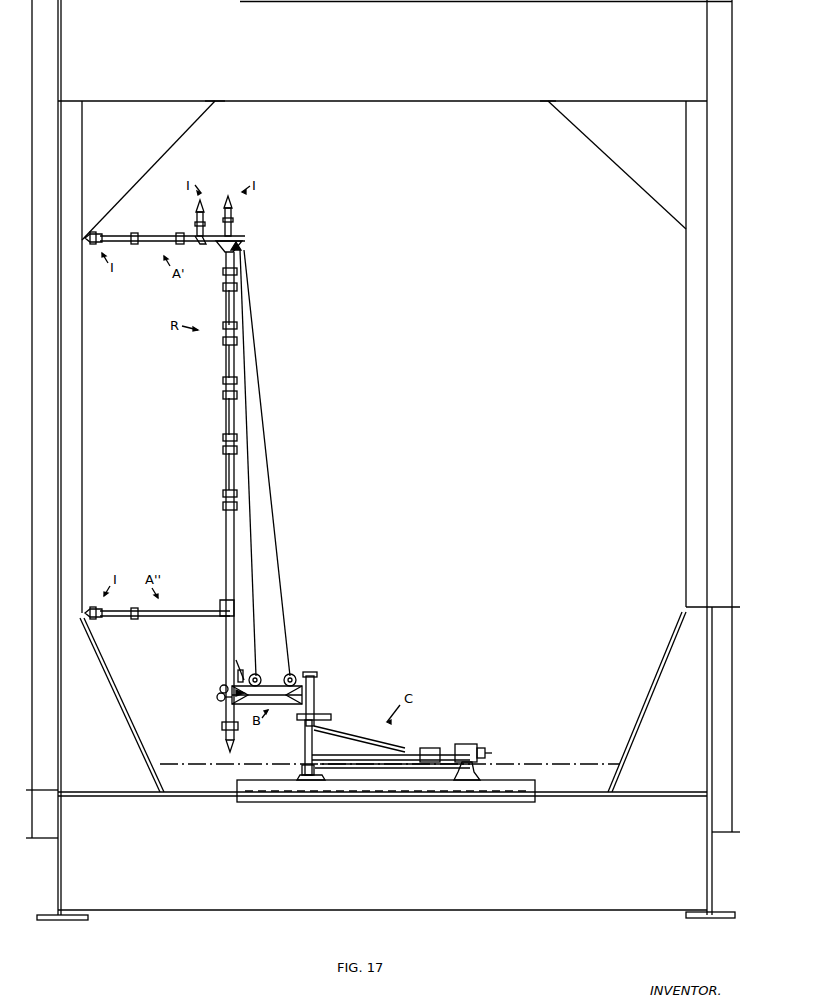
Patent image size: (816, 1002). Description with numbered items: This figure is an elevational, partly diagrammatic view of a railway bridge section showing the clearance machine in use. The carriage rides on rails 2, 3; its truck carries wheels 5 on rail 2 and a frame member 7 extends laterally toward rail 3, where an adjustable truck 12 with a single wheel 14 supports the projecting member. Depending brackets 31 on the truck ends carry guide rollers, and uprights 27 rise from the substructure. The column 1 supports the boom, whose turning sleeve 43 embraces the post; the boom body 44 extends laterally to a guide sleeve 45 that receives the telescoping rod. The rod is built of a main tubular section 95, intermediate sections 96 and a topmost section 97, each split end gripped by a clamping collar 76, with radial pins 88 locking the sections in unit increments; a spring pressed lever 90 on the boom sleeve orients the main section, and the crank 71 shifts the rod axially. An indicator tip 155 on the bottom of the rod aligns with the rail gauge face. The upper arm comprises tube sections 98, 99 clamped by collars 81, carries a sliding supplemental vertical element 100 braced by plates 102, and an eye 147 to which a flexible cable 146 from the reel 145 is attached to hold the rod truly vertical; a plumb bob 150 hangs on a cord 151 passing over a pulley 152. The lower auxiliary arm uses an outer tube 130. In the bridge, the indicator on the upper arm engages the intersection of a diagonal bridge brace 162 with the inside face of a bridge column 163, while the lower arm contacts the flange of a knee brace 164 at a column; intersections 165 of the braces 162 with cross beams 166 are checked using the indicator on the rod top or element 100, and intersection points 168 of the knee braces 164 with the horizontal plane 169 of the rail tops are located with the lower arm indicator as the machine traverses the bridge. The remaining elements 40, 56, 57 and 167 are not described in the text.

The column 1 is at (312, 742).
The rail 2 is at (298, 773).
The rail 3 is at (476, 767).
The wheel 5 is at (302, 766).
The frame member 7 is at (358, 764).
The adjustable truck 12 is at (458, 744).
The wheel 14 is at (478, 757).
The upright 27 is at (304, 753).
The bracket 31 is at (318, 768).
The bracket 40 is at (458, 765).
The sleeve 43 is at (314, 695).
The boom body 44 is at (266, 673).
The guide sleeve 45 is at (218, 689).
The bracket 56 is at (300, 716).
The plate 57 is at (331, 714).
The crank 71 is at (217, 697).
The clamping collar 76 is at (238, 271).
The clamping collar 81 is at (135, 236).
The radial pin 88 is at (223, 285).
The spring pressed lever 90 is at (236, 675).
The main tubular section 95 is at (226, 540).
The intermediate tubular section 96 is at (226, 302).
The topmost tubular section 97 is at (232, 224).
The outermost tube section 98 is at (180, 233).
The tubular section 99 is at (102, 236).
The supplemental vertical rod element 100 is at (198, 220).
The brace plate 102 is at (210, 242).
The outer telescoping tube 130 is at (205, 622).
The reel 145 is at (291, 673).
The flexible cable 146 is at (244, 298).
The eye 147 is at (244, 244).
The plumb bob 150 is at (240, 679).
The flexible cord 151 is at (258, 450).
The pulley 152 is at (244, 248).
The indicator tip 155 is at (224, 744).
The diagonal bridge brace 162 is at (170, 144).
The bridge column 163 is at (80, 383).
The knee brace 164 is at (112, 700).
The intersection 165 is at (216, 102).
The cross beam 166 is at (439, 43).
The bottom beam 167 is at (330, 861).
The intersection point 168 is at (160, 772).
The horizontal plane 169 is at (540, 764).